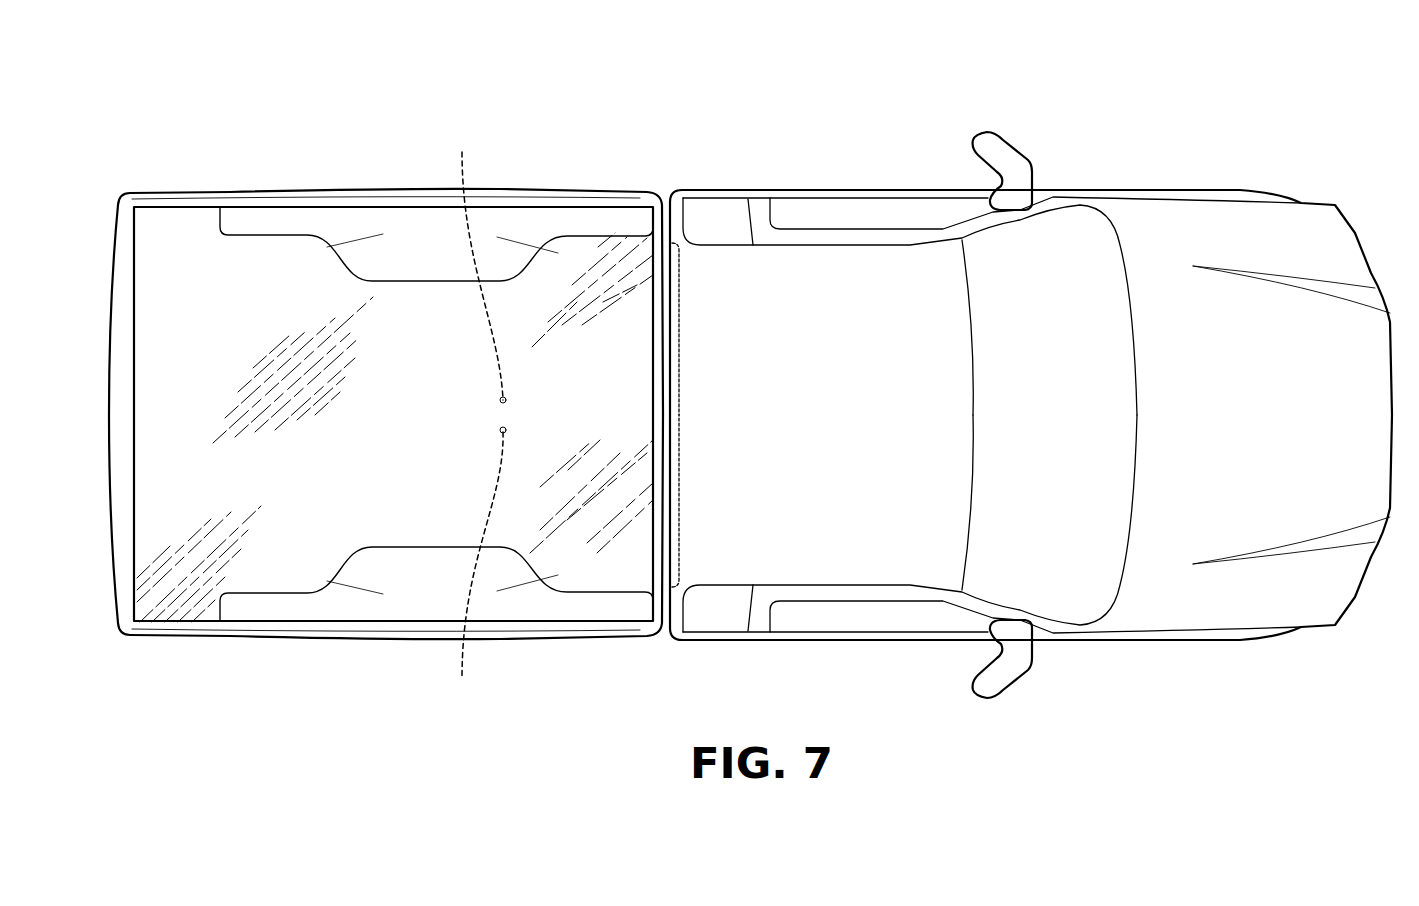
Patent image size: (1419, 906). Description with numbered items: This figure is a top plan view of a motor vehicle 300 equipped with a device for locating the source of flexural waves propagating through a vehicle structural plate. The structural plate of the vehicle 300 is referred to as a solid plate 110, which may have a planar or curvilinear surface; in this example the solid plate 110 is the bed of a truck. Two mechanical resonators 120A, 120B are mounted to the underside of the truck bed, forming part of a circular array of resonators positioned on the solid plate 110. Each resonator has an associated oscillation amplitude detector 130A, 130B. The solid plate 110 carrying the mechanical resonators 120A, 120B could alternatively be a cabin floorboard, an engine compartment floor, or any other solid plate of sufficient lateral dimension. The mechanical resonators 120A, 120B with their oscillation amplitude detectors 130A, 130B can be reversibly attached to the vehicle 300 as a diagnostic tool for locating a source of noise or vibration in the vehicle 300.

The vehicle 300 is at (750, 369).
The solid plate 110 is at (597, 358).
The mechanical resonator 120A is at (470, 266).
The mechanical resonator 120B is at (468, 568).
The oscillation amplitude detector 130A is at (500, 399).
The oscillation amplitude detector 130B is at (500, 430).